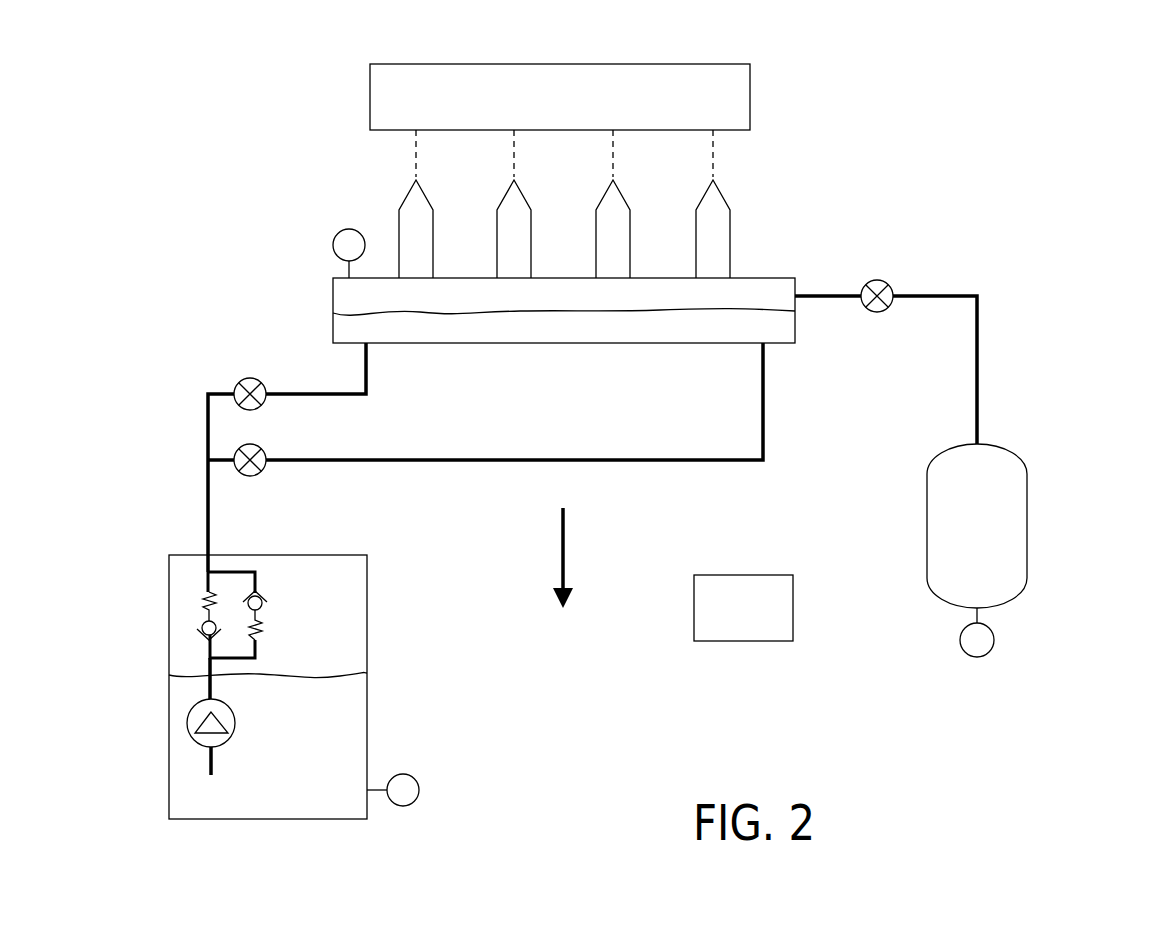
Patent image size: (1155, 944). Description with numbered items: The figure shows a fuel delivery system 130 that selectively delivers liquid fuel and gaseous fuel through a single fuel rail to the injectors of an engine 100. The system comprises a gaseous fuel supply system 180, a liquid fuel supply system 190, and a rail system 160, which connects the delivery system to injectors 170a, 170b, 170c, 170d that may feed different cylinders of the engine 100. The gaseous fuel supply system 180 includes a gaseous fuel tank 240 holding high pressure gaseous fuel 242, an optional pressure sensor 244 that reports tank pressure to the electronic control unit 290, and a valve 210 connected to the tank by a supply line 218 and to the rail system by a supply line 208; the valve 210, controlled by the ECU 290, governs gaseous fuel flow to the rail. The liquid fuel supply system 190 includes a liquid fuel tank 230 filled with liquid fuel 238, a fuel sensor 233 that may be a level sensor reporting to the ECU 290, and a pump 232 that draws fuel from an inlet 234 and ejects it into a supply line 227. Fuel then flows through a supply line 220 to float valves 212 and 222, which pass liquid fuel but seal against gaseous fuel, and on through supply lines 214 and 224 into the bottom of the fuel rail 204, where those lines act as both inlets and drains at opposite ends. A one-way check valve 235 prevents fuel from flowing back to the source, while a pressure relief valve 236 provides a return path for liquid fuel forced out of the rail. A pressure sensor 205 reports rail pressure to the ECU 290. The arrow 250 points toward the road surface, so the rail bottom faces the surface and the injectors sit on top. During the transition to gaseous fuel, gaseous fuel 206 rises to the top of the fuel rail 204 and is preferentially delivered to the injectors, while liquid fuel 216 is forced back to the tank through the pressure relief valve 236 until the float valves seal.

The engine 100 is at (750, 104).
The fuel delivery system 130 is at (1045, 226).
The rail system 160 is at (268, 226).
The injector 170a is at (420, 192).
The injector 170b is at (518, 192).
The injector 170c is at (617, 192).
The injector 170d is at (717, 192).
The gaseous fuel supply system 180 is at (1054, 391).
The liquid fuel supply system 190 is at (115, 451).
The fuel rail 204 is at (333, 297).
The pressure sensor 205 is at (349, 229).
The gaseous fuel 206 is at (752, 292).
The supply line 208 is at (815, 292).
The valve 210 is at (878, 280).
The valve 212 is at (262, 380).
The supply line 214 is at (370, 374).
The liquid fuel 216 is at (540, 330).
The supply line 218 is at (980, 346).
The supply line 220 is at (208, 430).
The valve 222 is at (262, 446).
The supply line 224 is at (765, 415).
The supply line 227 is at (208, 670).
The liquid fuel tank 230 is at (368, 622).
The pump 232 is at (190, 718).
The fuel sensor 233 is at (415, 800).
The inlet 234 is at (210, 762).
The check valve 235 is at (205, 604).
The pressure relief valve 236 is at (258, 594).
The liquid fuel 238 is at (268, 800).
The gaseous fuel tank 240 is at (1010, 452).
The gaseous fuel 242 is at (1010, 508).
The pressure sensor 244 is at (990, 652).
The arrow 250 is at (566, 545).
The electronic control unit 290 is at (728, 575).